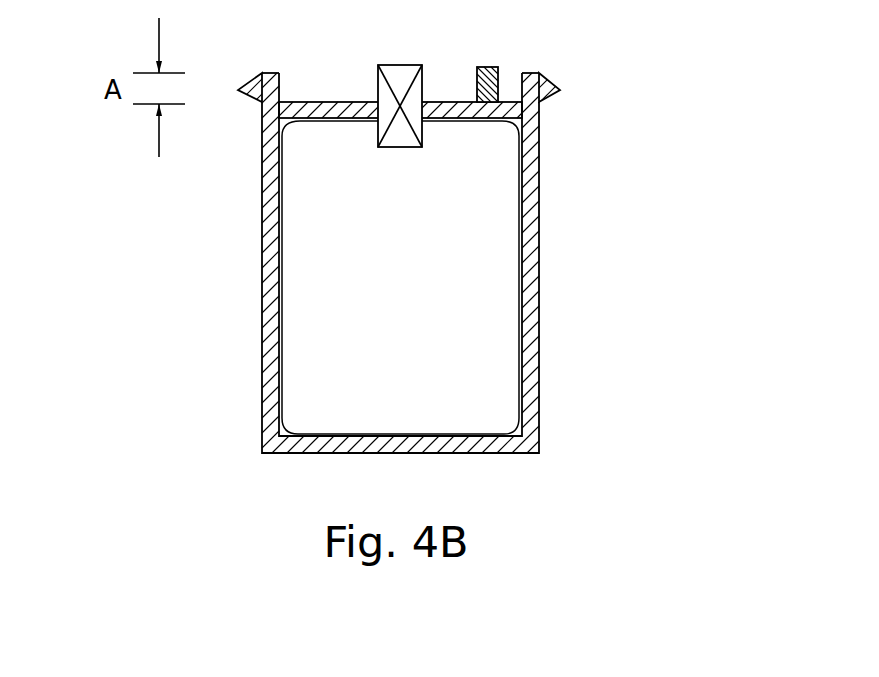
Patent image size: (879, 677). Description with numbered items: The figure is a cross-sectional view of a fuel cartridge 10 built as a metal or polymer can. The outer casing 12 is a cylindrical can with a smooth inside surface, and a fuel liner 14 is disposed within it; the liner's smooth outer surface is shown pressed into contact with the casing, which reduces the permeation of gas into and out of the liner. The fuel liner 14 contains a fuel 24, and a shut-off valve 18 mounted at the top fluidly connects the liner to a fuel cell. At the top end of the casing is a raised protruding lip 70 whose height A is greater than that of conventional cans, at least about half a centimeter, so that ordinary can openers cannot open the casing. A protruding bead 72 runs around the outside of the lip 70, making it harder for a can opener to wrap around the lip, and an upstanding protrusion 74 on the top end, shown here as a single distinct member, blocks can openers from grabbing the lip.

The fuel cartridge 10 is at (682, 123).
The outer casing 12 is at (536, 352).
The fuel liner 14 is at (535, 446).
The shut-off valve 18 is at (400, 65).
The fuel 24 is at (418, 292).
The raised protruding lip 70 is at (281, 80).
The protruding bead 72 is at (542, 82).
The upstanding protrusion 74 is at (489, 67).